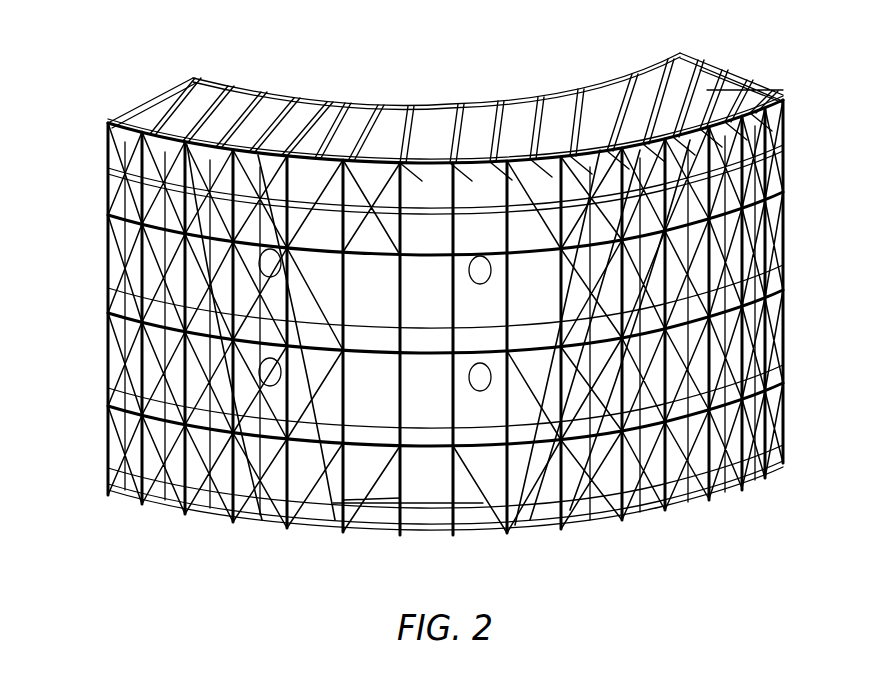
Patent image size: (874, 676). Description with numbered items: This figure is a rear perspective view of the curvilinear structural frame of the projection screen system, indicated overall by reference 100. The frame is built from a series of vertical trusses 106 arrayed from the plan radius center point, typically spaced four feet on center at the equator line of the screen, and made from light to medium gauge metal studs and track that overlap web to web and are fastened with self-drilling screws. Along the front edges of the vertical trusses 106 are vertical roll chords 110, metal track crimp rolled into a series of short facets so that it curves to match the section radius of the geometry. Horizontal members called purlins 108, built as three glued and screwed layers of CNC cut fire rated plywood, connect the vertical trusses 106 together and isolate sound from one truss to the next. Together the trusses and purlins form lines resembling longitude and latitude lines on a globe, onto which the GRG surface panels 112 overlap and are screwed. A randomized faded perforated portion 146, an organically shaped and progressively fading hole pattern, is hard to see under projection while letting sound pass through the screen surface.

The curved truss wall structure 100 is at (774, 58).
The vertical trusses 106 is at (180, 500).
The purlins 108 is at (422, 207).
The vertical roll chords 110 is at (177, 103).
The GRG surface panels 112 is at (378, 473).
The randomized faded perforated portion 146 is at (483, 378).